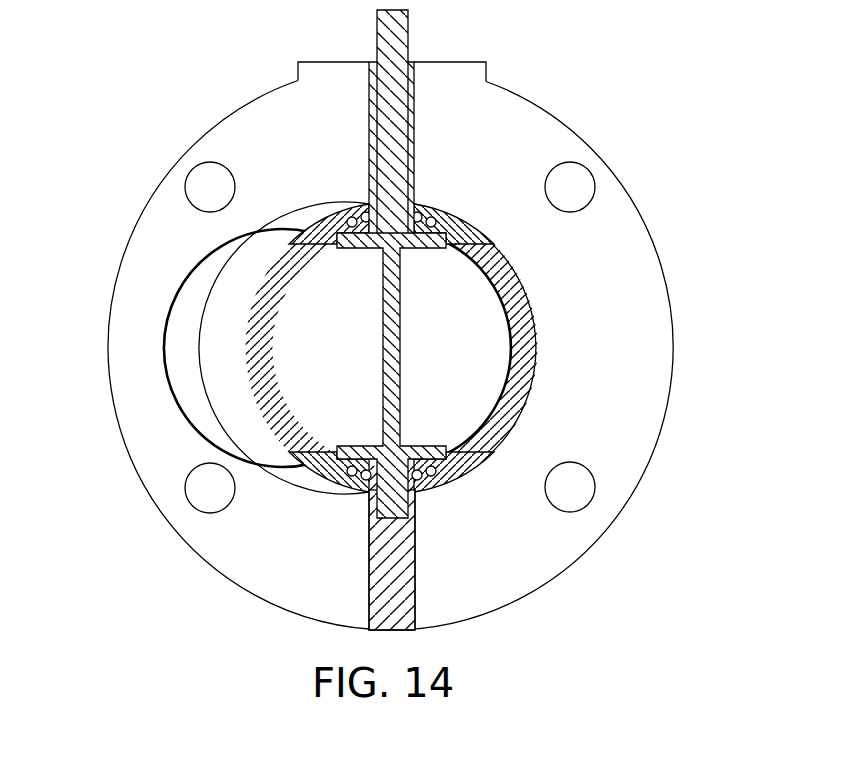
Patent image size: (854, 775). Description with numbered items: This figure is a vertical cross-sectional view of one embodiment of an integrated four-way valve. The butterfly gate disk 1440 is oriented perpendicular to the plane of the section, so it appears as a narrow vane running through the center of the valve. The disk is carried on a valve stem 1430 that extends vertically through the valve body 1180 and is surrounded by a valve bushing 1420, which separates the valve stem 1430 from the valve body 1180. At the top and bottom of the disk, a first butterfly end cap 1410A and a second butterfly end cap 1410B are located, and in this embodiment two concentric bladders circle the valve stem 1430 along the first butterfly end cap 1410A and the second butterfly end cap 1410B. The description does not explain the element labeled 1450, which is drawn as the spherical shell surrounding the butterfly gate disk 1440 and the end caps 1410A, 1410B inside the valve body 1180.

The valve body 1180 is at (488, 118).
The first butterfly end cap 1410A is at (262, 218).
The second butterfly end cap 1410B is at (261, 447).
The valve bushing 1420 is at (369, 114).
The valve stem 1430 is at (377, 28).
The butterfly gate disk 1440 is at (559, 368).
The ball 1450 is at (477, 348).